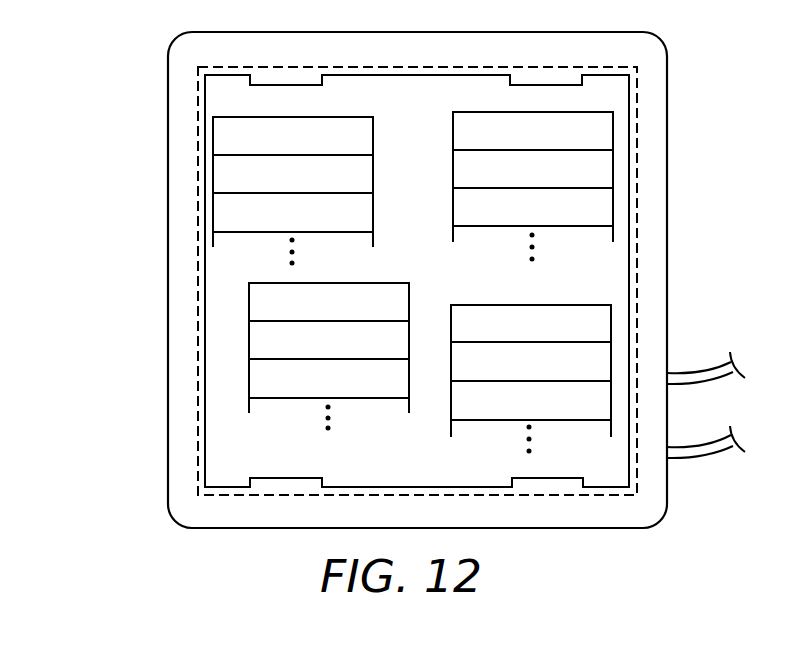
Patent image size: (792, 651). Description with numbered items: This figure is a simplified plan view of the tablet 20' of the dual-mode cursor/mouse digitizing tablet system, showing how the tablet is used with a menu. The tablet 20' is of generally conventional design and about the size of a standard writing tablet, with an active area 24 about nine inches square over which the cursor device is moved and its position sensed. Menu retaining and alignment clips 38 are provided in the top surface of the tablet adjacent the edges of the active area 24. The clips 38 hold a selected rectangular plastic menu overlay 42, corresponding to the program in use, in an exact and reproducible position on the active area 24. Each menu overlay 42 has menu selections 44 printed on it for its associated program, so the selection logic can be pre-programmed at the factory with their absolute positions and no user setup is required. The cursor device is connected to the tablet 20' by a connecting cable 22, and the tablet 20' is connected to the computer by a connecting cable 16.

The tablet 20' is at (445, 280).
The active area 24 is at (637, 185).
The menu overlay 42 is at (592, 265).
The menu retaining and alignment clips 38 is at (285, 77).
The menu selections 44 is at (380, 163).
The connecting cable 22 is at (695, 378).
The connecting cable 16 is at (685, 458).